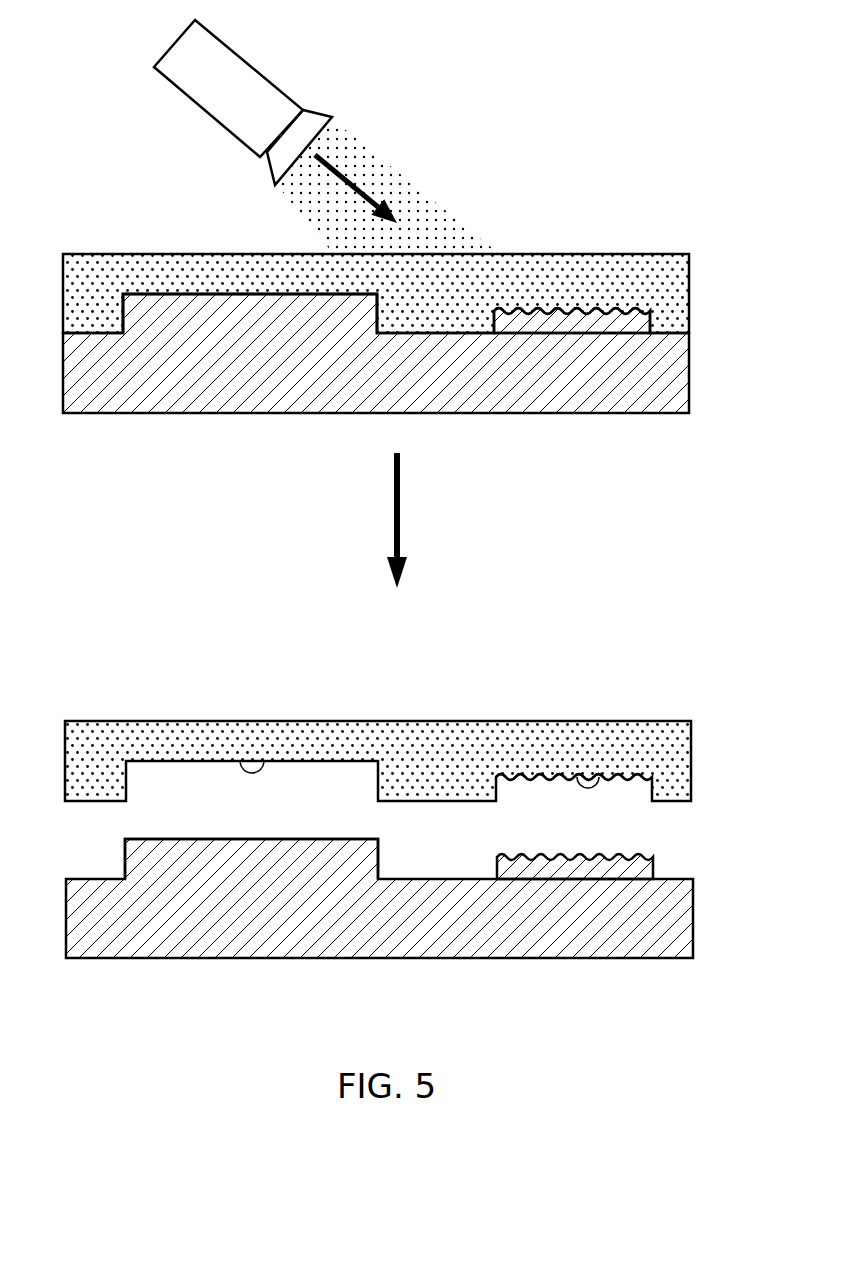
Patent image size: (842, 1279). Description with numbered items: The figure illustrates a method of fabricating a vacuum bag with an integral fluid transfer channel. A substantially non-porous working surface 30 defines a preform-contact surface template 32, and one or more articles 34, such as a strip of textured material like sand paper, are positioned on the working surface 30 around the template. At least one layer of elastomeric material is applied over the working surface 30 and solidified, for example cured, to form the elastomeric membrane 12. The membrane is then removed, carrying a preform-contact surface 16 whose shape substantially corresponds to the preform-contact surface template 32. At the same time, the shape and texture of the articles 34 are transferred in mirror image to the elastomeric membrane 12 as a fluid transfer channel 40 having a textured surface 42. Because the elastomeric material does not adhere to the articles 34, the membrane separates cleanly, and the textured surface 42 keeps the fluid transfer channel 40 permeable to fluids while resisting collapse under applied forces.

The elastomeric membrane 12 is at (132, 254).
The preform-contact surface 16 is at (262, 762).
The working surface 30 is at (545, 413).
The preform-contact surface template 32 is at (213, 320).
The articles 34 is at (633, 322).
The fluid transfer channel 40 is at (508, 766).
The textured surface 42 is at (575, 777).